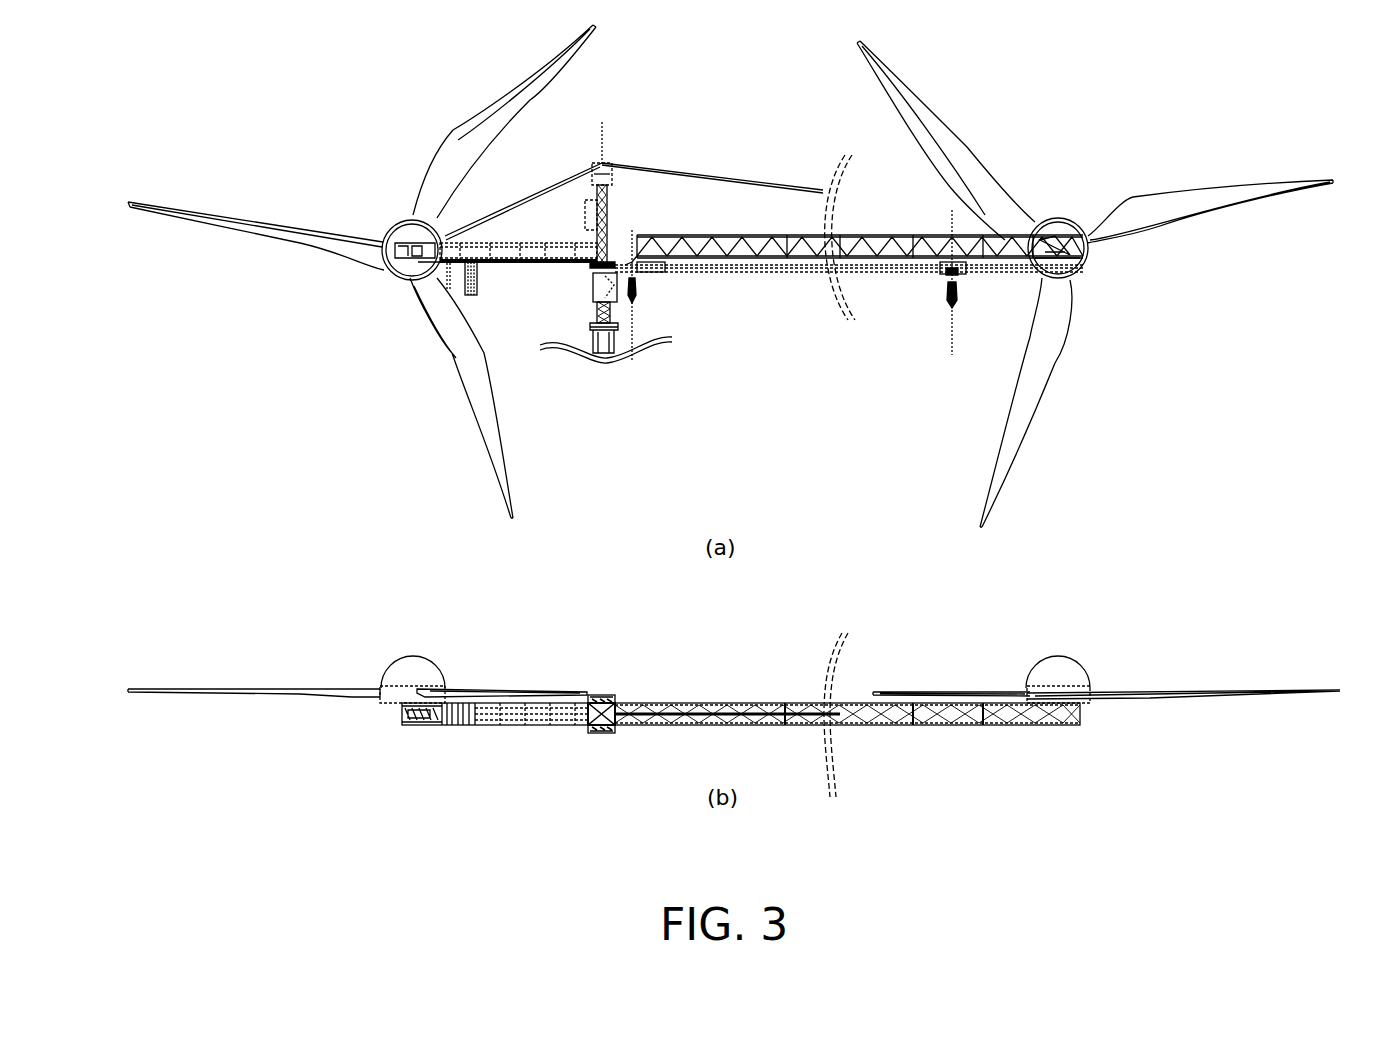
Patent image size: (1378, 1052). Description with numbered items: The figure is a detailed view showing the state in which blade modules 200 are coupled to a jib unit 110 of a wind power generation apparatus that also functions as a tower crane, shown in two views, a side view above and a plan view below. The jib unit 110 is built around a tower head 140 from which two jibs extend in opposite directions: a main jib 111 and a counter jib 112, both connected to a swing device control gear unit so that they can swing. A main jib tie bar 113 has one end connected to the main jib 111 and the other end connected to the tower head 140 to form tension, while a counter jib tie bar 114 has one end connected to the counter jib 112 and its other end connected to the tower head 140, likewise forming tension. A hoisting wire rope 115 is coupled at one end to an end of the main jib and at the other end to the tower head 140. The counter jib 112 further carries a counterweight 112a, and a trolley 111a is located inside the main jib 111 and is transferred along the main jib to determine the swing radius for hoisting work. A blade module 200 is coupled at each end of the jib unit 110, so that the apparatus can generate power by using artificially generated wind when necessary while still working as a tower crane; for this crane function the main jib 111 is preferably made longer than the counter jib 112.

The blade module 200 is at (286, 180).
The jib unit 110 is at (783, 404).
The main jib 111 is at (776, 265).
The trolley 111a is at (650, 270).
The counter jib 112 is at (510, 265).
The counterweight 112a is at (467, 280).
The main jib tie bar 113 is at (738, 178).
The counter jib tie bar 114 is at (577, 173).
The hoisting wire rope 115 is at (525, 210).
The tower head 140 is at (612, 210).